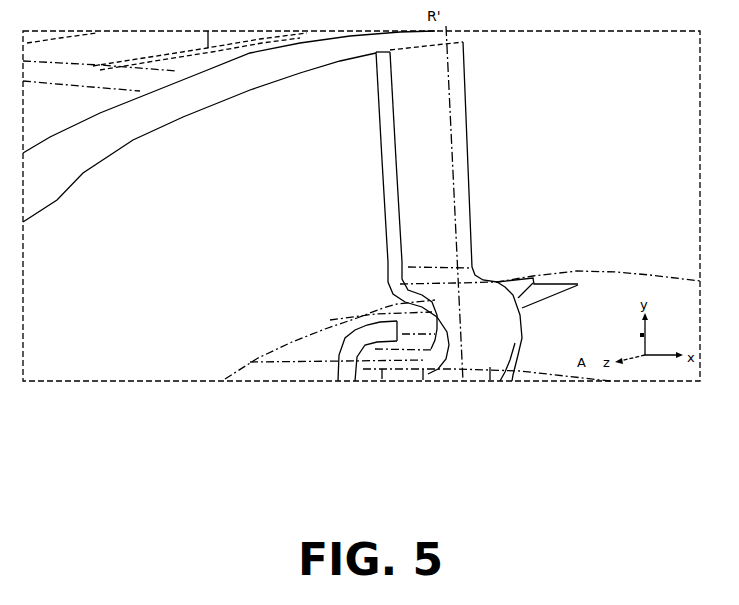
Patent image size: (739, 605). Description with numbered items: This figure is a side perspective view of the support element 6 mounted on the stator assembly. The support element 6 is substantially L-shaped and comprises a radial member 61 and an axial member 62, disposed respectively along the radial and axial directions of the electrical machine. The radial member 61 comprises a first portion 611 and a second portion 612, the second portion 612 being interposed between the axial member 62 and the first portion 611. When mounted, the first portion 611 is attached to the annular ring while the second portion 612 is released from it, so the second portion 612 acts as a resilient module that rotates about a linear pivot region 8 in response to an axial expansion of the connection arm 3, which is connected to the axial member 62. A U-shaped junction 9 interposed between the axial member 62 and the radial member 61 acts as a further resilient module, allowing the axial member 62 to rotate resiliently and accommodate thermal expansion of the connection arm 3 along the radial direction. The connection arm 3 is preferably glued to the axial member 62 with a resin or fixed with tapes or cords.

The connection arm 3 is at (337, 330).
The support element 6 is at (320, 123).
The linear pivot region 8 is at (368, 151).
The U-shaped junction 9 is at (500, 283).
The radial member 61 is at (500, 140).
The first portion 611 is at (405, 109).
The second portion 612 is at (385, 207).
The axial member 62 is at (365, 382).